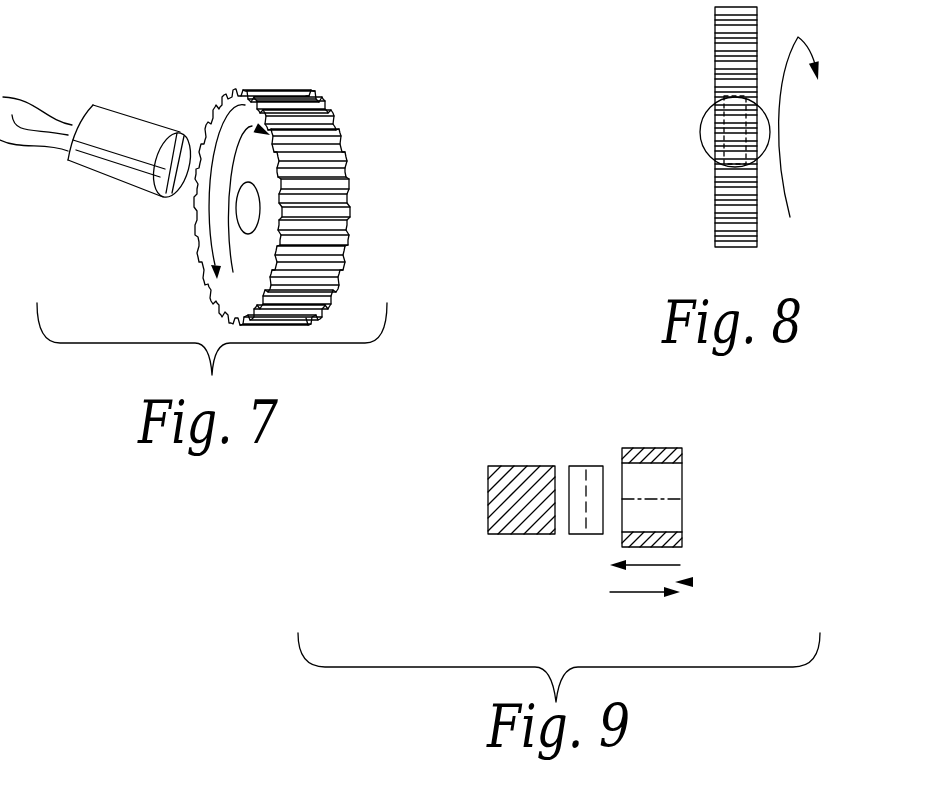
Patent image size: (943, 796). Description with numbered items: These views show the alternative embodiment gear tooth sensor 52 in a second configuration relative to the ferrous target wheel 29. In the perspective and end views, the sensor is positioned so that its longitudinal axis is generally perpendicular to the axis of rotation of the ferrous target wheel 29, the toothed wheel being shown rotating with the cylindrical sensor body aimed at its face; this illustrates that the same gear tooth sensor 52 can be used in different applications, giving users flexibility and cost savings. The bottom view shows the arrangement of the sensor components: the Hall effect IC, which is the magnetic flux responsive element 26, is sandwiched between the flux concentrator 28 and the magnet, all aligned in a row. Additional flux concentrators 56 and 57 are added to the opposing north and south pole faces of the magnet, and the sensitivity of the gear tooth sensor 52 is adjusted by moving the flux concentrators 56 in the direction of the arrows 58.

In FIG. 7, the ferrous target wheel 29 is at (262, 88).
In FIG. 8, the ferrous target wheel 29 is at (716, 200).
In FIG. 9, the flux concentrator 28 is at (527, 466).
In FIG. 9, the magnetic flux responsive element 26 is at (586, 466).
In FIG. 9, the flux concentrator 56 is at (642, 448).
In FIG. 9, the flux concentrator 57 is at (682, 538).
In FIG. 9, the arrows 58 is at (693, 582).
In FIG. 9, the gear tooth sensor 52 is at (478, 560).